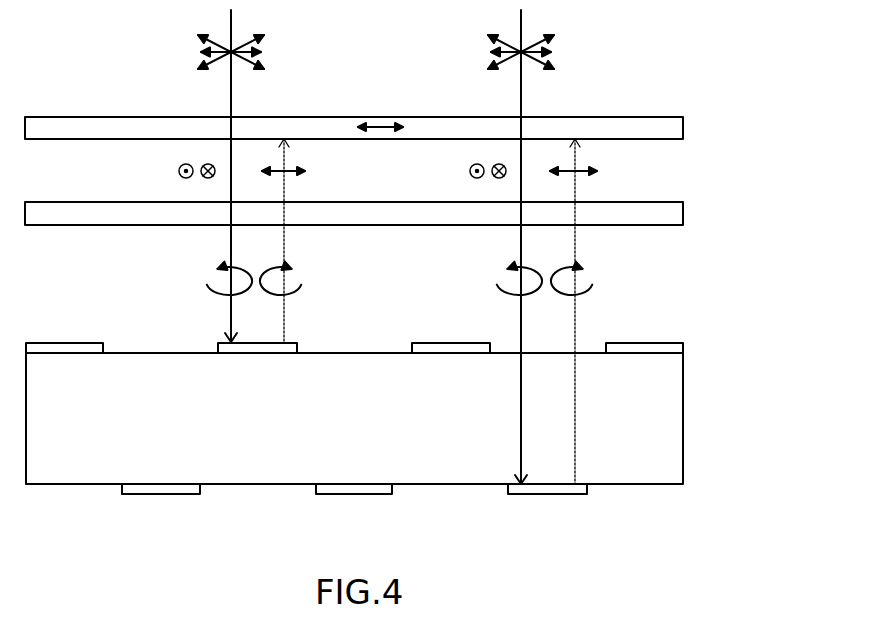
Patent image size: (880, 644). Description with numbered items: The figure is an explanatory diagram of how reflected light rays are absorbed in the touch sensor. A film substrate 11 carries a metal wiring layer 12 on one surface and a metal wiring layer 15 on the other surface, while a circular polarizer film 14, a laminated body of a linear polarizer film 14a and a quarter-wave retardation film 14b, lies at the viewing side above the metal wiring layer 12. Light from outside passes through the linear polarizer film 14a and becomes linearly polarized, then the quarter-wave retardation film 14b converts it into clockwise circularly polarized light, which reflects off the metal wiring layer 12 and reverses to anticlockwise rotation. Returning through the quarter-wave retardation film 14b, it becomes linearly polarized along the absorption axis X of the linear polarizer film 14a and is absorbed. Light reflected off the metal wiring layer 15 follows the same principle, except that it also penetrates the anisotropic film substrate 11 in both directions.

The film substrate 11 is at (668, 427).
The metal wiring layer 12 is at (80, 342).
The circular polarizer film 14 is at (781, 82).
The linear polarizer film 14a is at (683, 132).
The λ/4 retardation film 14b is at (683, 213).
The metal wiring layer 15 is at (167, 494).
The absorption axis X is at (383, 122).